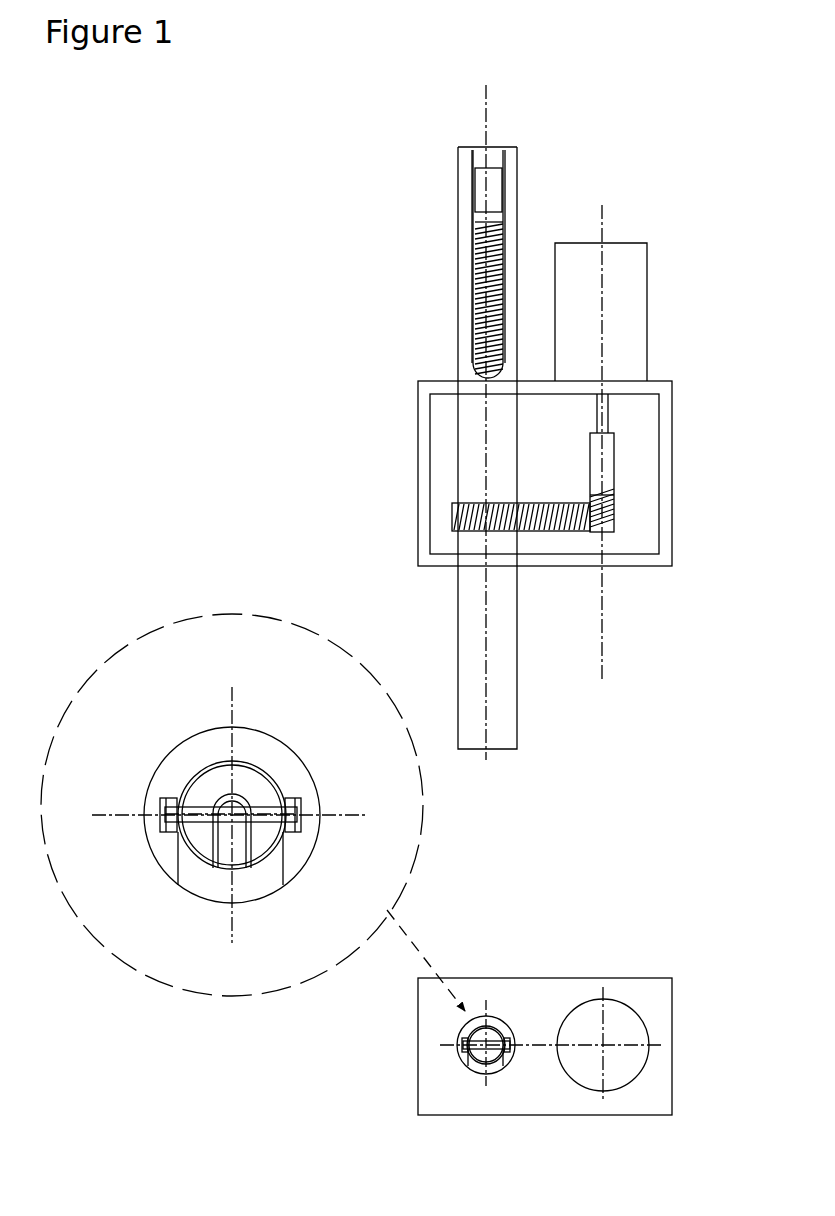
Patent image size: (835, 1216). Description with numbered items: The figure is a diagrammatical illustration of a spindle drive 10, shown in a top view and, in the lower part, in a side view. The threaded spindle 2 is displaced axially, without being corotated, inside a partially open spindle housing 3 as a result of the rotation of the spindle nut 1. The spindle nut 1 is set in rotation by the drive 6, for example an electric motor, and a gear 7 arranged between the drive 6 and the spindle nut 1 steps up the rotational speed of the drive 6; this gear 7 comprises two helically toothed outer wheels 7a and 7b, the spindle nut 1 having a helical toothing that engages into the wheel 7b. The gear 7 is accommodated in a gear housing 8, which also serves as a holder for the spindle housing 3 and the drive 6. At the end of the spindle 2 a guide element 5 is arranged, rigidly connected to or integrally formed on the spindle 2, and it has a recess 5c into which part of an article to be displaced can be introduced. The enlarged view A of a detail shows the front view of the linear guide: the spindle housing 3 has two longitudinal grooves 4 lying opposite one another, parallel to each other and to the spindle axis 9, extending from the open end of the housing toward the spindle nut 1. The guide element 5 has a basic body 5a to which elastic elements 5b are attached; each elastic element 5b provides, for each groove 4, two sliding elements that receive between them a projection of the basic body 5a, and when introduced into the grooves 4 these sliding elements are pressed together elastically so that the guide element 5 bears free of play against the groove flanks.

The spindle nut 1 is at (455, 520).
The threaded spindle 2 is at (475, 290).
The spindle housing 3 is at (458, 160).
The longitudinal grooves 4 is at (165, 820).
The guide element 5 is at (472, 215).
The basic body 5a is at (500, 1027).
The elastic elements 5b is at (207, 783).
The recess 5c is at (495, 188).
The drive 6 is at (640, 280).
The gear 7 is at (633, 468).
The helically toothed outer wheel 7a is at (614, 513).
The helically toothed outer wheel 7b is at (560, 527).
The gear housing 8 is at (663, 417).
The spindle axis 9 is at (486, 112).
The spindle drive 10 is at (165, 207).
The view of a detail A is at (135, 637).